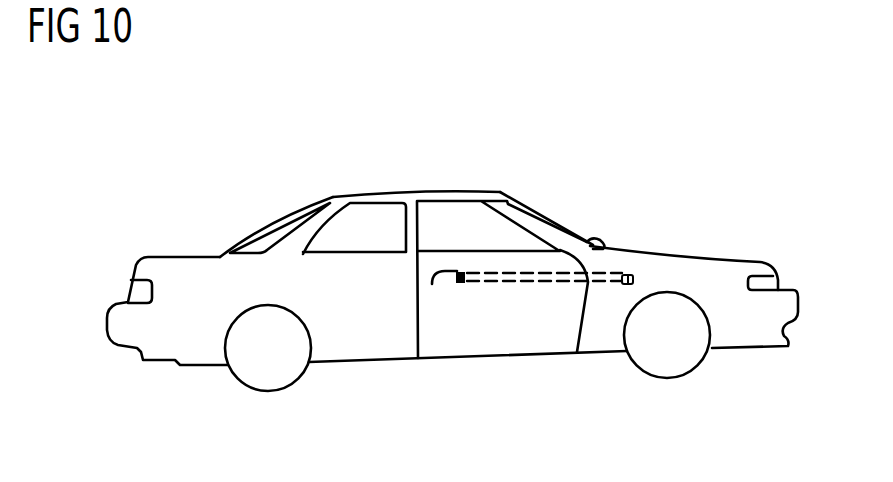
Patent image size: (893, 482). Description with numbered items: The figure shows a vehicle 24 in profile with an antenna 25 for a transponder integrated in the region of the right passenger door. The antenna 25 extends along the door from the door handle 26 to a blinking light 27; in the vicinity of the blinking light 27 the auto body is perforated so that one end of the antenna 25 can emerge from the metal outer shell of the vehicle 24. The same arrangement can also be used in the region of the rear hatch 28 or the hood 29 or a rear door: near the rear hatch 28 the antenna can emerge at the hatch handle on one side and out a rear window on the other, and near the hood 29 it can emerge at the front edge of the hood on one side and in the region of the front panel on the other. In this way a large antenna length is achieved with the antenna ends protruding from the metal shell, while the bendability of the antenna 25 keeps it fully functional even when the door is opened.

The vehicle 24 is at (342, 203).
The antenna 25 is at (563, 280).
The door handle 26 is at (445, 290).
The blinking light 27 is at (627, 285).
The rear hatch 28 is at (175, 268).
The hood 29 is at (705, 268).